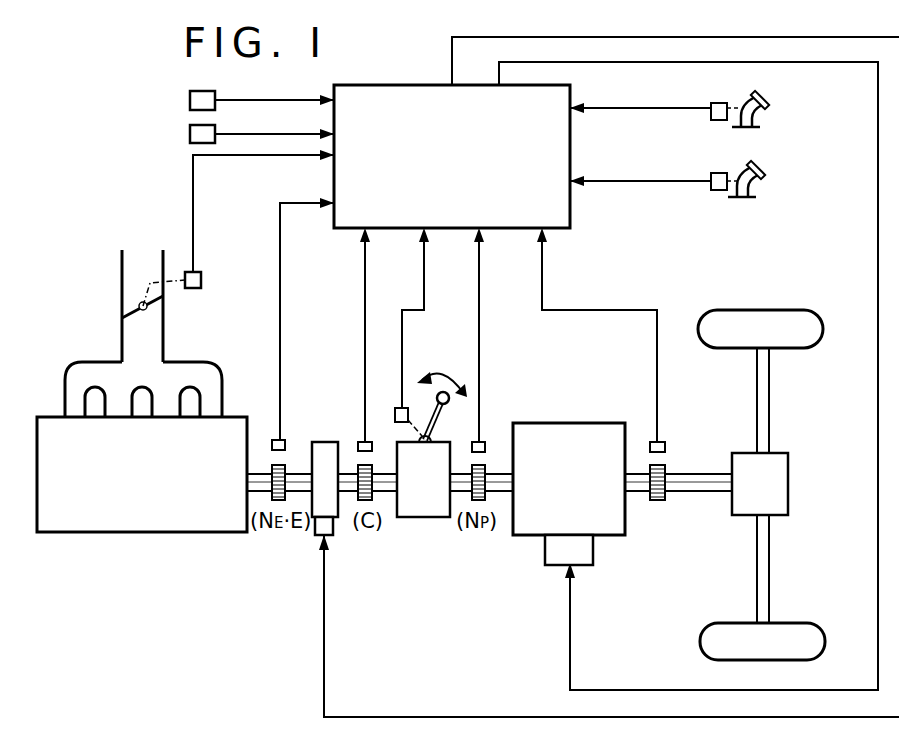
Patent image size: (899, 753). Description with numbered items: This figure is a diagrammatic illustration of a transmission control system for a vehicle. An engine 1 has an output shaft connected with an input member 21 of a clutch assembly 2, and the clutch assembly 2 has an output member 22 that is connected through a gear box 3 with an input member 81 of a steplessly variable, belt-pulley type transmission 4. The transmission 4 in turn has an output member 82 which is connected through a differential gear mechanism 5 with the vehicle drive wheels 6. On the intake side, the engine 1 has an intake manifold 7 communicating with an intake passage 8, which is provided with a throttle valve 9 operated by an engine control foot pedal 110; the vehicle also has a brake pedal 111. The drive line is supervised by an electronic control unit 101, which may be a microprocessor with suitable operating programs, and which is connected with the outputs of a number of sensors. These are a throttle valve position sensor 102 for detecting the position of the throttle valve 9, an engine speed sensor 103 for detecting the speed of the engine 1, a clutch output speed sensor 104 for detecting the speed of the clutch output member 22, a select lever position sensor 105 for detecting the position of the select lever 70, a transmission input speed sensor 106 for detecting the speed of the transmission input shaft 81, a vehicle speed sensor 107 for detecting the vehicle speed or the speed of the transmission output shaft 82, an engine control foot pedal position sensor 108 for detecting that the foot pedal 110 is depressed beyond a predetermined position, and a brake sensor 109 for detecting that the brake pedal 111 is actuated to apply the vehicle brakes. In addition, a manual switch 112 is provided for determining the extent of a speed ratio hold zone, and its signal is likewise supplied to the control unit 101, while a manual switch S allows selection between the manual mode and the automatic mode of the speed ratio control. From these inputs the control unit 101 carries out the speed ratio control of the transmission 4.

The engine 1 is at (197, 517).
The clutch assembly 2 is at (322, 506).
The gear box 3 is at (425, 505).
The steplessly variable, belt-pulley type transmission 4 is at (608, 536).
The differential gear mechanism 5 is at (789, 476).
The vehicle drive wheels 6 is at (810, 312).
The intake manifold 7 is at (65, 385).
The intake passage 8 is at (122, 268).
The throttle valve 9 is at (130, 323).
The input member 21 is at (292, 470).
The output member 22 is at (353, 493).
The select lever 70 is at (436, 420).
The input member 81 is at (505, 492).
The output member 82 is at (646, 492).
The electronic control unit 101 is at (408, 85).
The throttle valve position sensor 102 is at (201, 285).
The engine speed sensor 103 is at (286, 441).
The clutch output speed sensor 104 is at (360, 441).
The select lever position sensor 105 is at (410, 407).
The transmission input speed sensor 106 is at (486, 441).
The vehicle speed sensor 107 is at (665, 443).
The engine control foot pedal position sensor 108 is at (717, 121).
The brake sensor 109 is at (717, 191).
The engine control foot pedal 110 is at (772, 97).
The brake pedal 111 is at (768, 160).
The manual switch 112 is at (190, 101).
The manual switch S is at (190, 132).